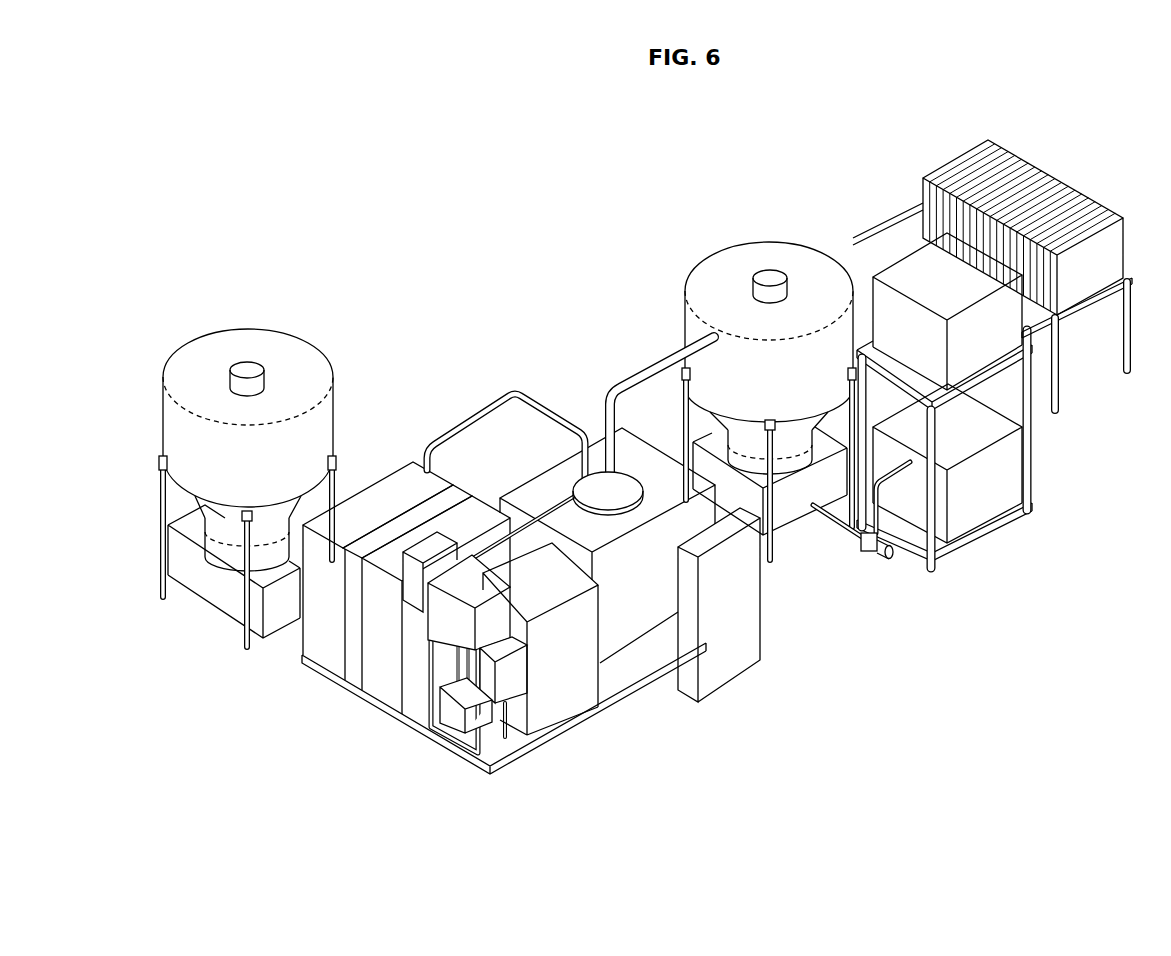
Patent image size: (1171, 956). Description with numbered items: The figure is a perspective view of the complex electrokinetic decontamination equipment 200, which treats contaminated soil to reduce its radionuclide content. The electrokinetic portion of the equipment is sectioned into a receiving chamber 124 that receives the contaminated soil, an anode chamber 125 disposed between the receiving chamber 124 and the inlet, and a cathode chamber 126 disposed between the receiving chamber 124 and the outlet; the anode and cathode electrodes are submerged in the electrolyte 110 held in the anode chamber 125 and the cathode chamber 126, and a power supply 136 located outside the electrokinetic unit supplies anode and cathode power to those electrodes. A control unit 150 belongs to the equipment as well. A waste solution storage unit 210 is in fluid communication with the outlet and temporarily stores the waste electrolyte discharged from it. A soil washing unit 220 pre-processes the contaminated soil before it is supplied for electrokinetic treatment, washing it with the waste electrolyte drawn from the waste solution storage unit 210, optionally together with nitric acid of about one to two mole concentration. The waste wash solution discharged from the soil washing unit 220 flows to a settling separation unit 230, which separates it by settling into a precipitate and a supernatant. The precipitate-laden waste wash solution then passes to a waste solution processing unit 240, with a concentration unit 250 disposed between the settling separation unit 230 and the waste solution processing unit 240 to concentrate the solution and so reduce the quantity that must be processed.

The complex electrokinetic decontamination equipment 200 is at (618, 197).
The electrolyte 110 is at (1002, 348).
The receiving chamber 124 is at (351, 653).
The anode chamber 125 is at (386, 678).
The cathode chamber 126 is at (315, 628).
The power supply 136 is at (576, 693).
The control unit 150 is at (745, 629).
The waste solution storage unit 210 is at (634, 618).
The soil washing unit 220 is at (316, 326).
The settling separation unit 230 is at (682, 290).
The waste solution processing unit 240 is at (916, 175).
The concentration unit 250 is at (988, 401).